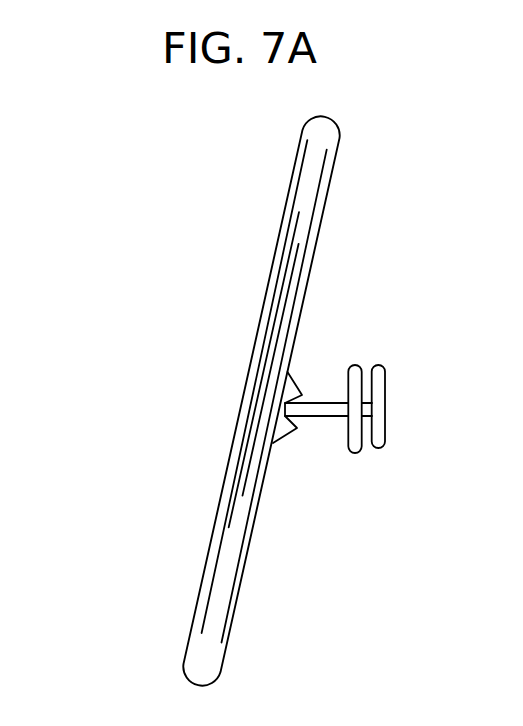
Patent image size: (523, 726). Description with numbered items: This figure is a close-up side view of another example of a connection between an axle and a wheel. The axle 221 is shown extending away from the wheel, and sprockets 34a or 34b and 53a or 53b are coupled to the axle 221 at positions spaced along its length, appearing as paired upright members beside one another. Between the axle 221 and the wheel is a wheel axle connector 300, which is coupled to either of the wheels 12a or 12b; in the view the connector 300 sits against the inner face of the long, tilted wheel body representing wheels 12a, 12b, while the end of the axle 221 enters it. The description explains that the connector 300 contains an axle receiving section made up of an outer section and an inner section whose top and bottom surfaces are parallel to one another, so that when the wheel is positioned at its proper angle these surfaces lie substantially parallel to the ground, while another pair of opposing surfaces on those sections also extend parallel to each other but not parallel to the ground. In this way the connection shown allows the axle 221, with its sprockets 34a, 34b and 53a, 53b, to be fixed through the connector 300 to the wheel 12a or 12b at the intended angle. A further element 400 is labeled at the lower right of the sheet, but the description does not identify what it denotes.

The wheel 12a is at (188, 400).
The wheel 12b is at (270, 267).
The axle 221 is at (315, 405).
The sprocket 34a is at (430, 362).
The sprocket 34b is at (380, 365).
The wheel axle connector 300 is at (285, 426).
The sprocket 53a is at (402, 463).
The sprocket 53b is at (358, 453).
The wall 400 is at (513, 723).